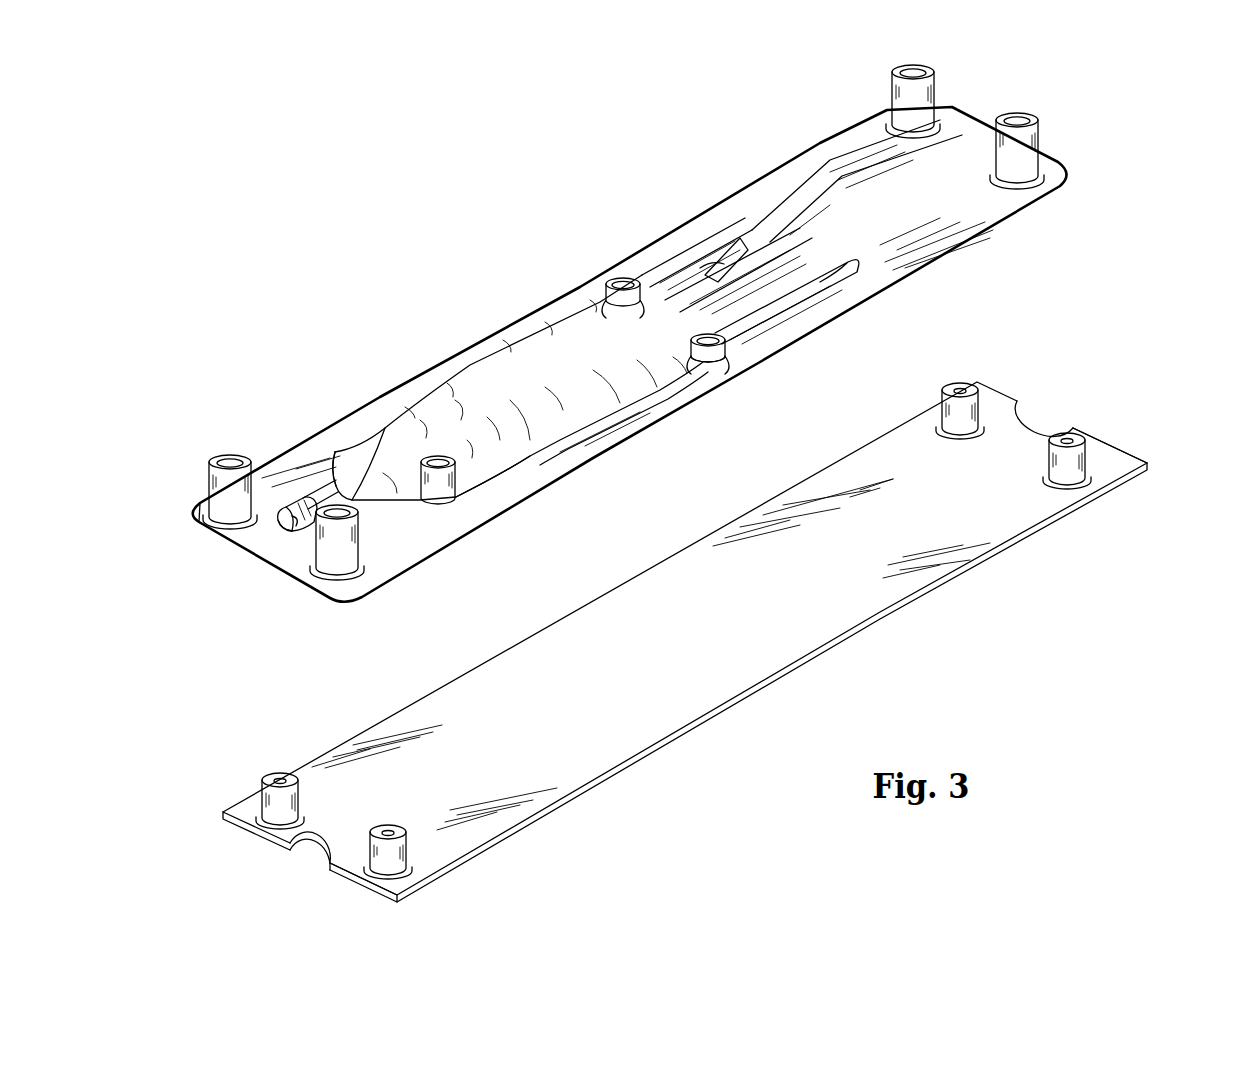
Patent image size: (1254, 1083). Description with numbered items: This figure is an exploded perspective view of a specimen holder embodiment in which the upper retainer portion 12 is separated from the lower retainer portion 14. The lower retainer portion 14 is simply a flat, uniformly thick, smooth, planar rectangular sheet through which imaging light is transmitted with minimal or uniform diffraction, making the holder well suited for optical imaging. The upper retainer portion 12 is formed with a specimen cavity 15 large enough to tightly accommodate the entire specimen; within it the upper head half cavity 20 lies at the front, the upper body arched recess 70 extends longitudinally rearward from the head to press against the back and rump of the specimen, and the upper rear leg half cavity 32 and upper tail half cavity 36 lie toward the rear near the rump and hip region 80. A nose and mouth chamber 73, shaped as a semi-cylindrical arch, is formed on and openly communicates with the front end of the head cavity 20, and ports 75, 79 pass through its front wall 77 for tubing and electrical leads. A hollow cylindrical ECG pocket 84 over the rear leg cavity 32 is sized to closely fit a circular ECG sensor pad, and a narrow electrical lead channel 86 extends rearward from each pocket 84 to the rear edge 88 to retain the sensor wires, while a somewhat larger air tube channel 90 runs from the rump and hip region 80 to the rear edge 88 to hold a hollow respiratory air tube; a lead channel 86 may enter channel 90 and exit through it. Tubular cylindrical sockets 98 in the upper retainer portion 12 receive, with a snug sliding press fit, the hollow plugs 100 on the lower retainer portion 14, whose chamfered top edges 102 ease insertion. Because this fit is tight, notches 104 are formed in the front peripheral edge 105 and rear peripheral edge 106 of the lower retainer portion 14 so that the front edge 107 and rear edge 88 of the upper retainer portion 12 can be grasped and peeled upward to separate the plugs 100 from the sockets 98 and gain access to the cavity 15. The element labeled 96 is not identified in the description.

The upper retainer portion 12 is at (383, 232).
The lower retainer portion 14 is at (823, 694).
The specimen cavity 15 is at (538, 413).
The upper head half cavity 20 is at (350, 463).
The upper rear leg half cavity 32 is at (676, 356).
The upper tail half cavity 36 is at (753, 258).
The upper body arched recess 70 is at (472, 393).
The nose and mouth chamber 73 is at (300, 500).
The port 75 is at (230, 537).
The front wall 77 is at (283, 527).
The port 79 is at (293, 527).
The rump and hip region 80 is at (572, 350).
The ECG pocket 84 is at (706, 333).
The electrical lead channel 86 is at (747, 222).
The rear edge 88 is at (1057, 160).
The air tube channel 90 is at (907, 203).
The channel segment 96 is at (710, 267).
The cylindrical socket 98 is at (1003, 122).
The plug 100 is at (1073, 467).
The chamfered top edge 102 is at (400, 835).
The notch 104 is at (1043, 420).
The front peripheral edge 105 is at (357, 882).
The rear peripheral edge 106 is at (1113, 442).
The front edge 107 is at (283, 560).